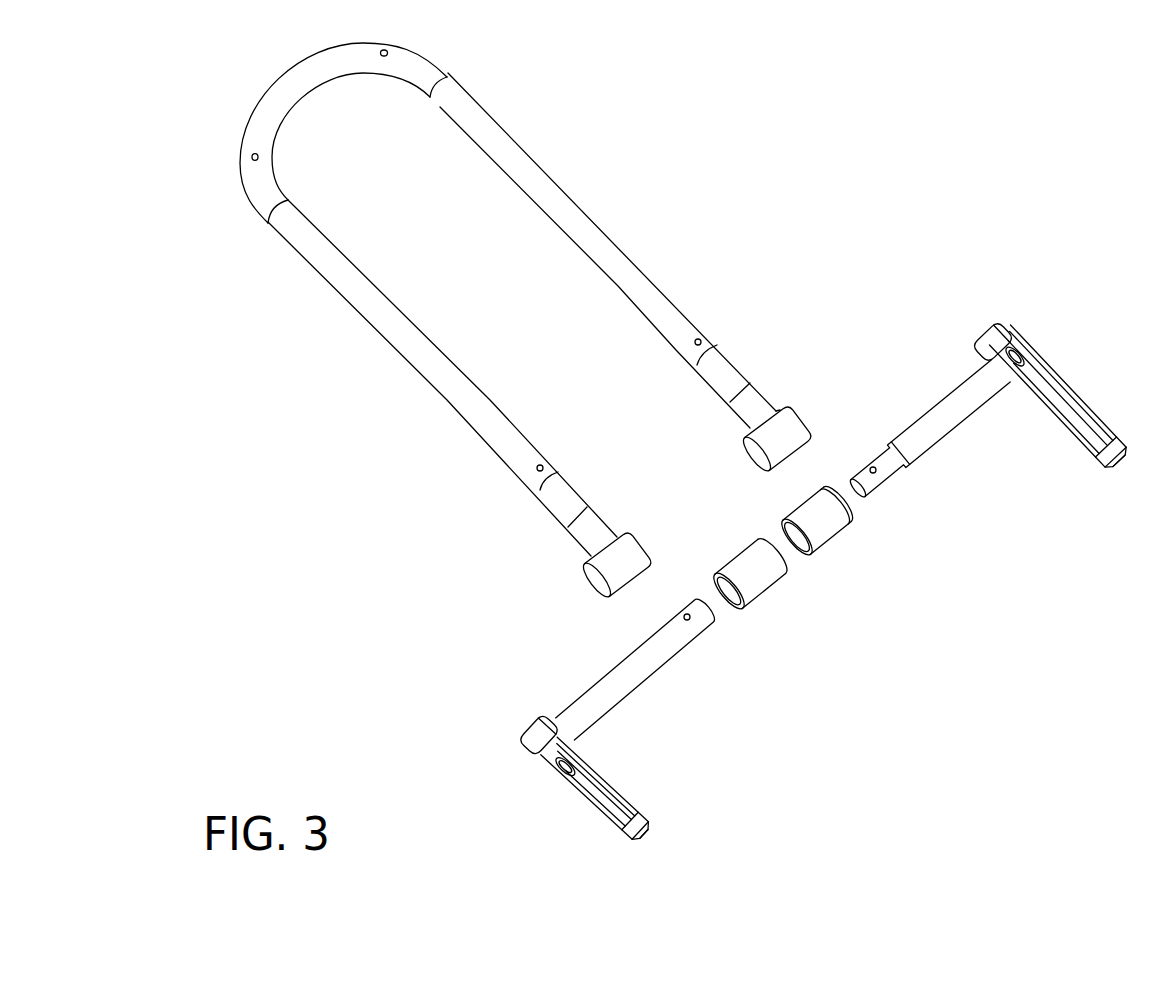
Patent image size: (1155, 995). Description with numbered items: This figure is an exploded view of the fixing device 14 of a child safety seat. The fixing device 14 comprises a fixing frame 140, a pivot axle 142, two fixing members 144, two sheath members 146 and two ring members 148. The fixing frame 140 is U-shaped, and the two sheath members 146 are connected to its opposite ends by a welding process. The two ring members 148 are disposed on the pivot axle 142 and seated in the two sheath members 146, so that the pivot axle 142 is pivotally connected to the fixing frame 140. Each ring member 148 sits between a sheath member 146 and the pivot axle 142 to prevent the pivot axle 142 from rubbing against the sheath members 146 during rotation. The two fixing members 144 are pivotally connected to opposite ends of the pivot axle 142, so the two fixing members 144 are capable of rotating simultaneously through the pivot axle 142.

The fixing device 14 is at (840, 141).
The fixing frame 140 is at (559, 186).
The pivot axle 142 is at (658, 662).
The fixing member 144 is at (615, 783).
The sheath member 146 is at (781, 406).
The ring member 148 is at (762, 578).